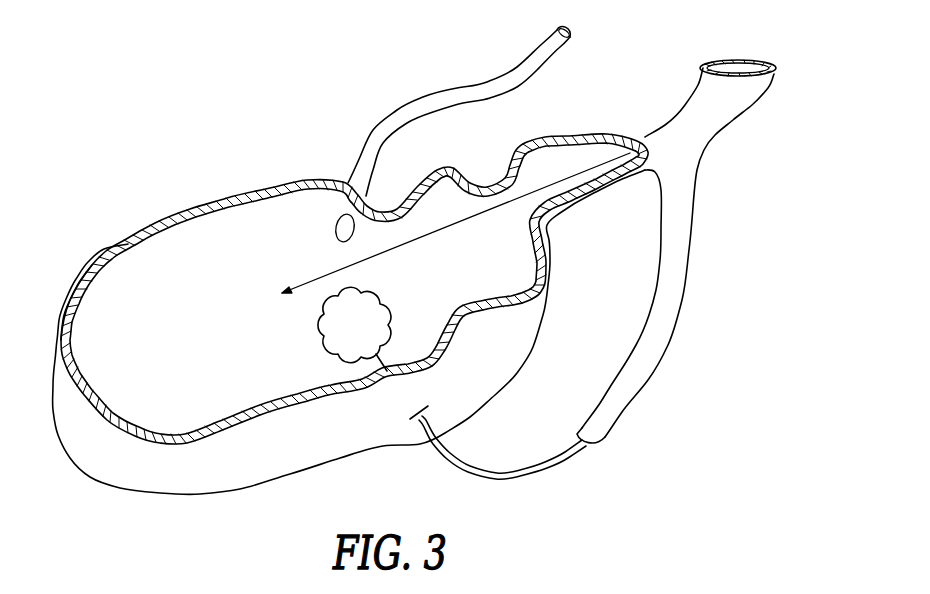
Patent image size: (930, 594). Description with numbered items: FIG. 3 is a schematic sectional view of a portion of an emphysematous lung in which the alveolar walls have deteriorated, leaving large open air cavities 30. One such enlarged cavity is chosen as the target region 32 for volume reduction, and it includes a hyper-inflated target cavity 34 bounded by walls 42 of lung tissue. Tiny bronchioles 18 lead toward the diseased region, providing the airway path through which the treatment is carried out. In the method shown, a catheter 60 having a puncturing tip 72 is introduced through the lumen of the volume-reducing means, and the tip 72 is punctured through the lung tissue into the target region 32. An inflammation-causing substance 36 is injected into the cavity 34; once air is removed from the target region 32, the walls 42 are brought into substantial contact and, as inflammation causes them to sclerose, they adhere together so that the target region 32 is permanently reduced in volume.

The bronchioles 18 is at (567, 160).
The cavities 30 is at (183, 200).
The target region 32 is at (237, 192).
The target cavity 34 is at (231, 338).
The inflammation-causing substance 36 is at (368, 338).
The walls of the cavity 42 is at (108, 285).
The catheter 60 is at (547, 488).
The puncturing tip 72 is at (393, 354).